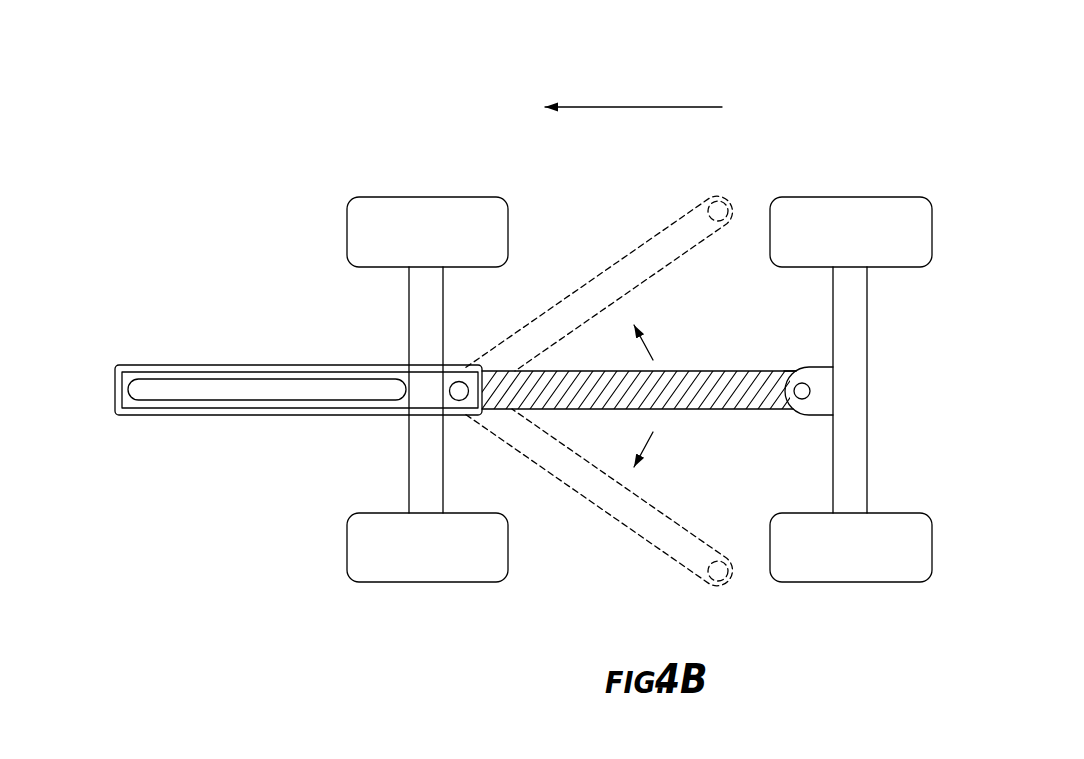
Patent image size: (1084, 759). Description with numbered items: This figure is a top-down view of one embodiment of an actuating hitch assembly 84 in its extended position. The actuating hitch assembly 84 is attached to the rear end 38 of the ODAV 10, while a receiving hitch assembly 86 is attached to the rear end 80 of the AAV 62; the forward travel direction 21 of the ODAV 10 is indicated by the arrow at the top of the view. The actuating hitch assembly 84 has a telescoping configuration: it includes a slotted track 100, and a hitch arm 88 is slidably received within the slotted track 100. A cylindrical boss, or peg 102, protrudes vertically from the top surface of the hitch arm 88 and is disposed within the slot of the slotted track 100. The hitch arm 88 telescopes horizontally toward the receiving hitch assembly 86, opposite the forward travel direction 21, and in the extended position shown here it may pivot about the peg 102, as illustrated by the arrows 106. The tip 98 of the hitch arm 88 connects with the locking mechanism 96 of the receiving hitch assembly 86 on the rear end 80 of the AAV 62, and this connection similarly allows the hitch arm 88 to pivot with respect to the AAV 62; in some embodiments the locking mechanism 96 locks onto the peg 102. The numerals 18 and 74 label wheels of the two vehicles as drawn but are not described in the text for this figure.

The ODAV 10 is at (333, 158).
The wheel 18 is at (390, 582).
The forward travel direction 21 is at (598, 104).
The rear end 38 is at (522, 233).
The AAV 62 is at (917, 165).
The wheel 74 is at (855, 582).
The rear end 80 is at (750, 205).
The actuating hitch assembly 84 is at (205, 360).
The receiving hitch assembly 86 is at (791, 430).
The hitch arm 88 is at (738, 410).
The locking mechanism 96 is at (796, 383).
The tip 98 is at (786, 371).
The slotted track 100 is at (168, 408).
The peg 102 is at (459, 392).
The arrows 106 is at (648, 342).